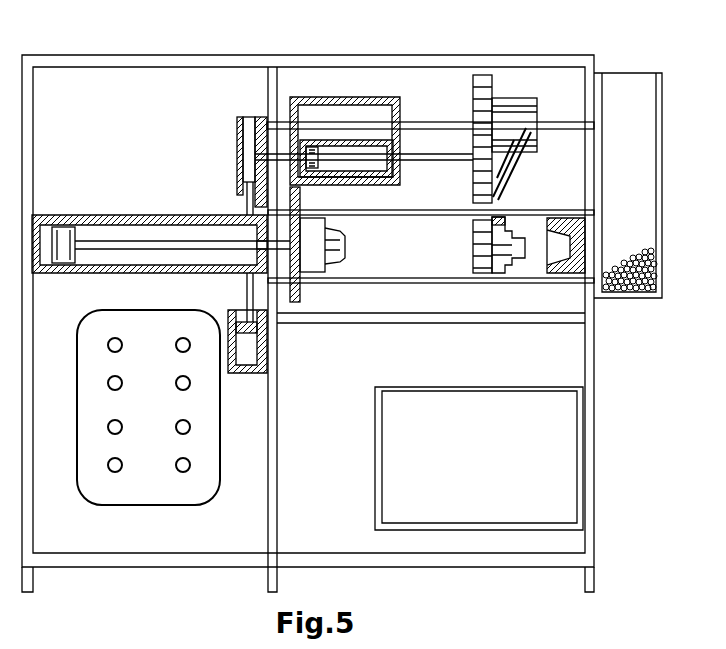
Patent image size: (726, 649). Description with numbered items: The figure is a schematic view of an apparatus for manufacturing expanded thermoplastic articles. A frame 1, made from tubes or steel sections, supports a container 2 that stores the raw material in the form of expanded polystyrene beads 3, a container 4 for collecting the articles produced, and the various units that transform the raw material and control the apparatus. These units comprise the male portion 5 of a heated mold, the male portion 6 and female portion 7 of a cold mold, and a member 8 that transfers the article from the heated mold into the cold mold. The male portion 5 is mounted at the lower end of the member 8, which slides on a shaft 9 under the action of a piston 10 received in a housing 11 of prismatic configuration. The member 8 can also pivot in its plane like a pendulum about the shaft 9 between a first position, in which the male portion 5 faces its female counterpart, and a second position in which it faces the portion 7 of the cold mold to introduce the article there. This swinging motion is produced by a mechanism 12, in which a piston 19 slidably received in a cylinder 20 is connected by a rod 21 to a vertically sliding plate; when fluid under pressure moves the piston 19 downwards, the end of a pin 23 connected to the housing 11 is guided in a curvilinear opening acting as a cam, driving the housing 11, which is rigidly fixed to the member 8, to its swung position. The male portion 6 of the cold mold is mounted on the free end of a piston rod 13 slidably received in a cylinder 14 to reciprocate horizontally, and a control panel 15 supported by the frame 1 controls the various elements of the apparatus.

The frame 1 is at (122, 58).
The container 2 is at (650, 95).
The expanded polystyrene beads 3 is at (658, 270).
The container 4 is at (567, 463).
The male portion of the heated mold 5 is at (505, 218).
The male portion of the cold mold 6 is at (346, 246).
The female portion of the cold mold 7 is at (562, 218).
The member 8 is at (503, 98).
The shaft 9 is at (430, 122).
The piston 10 is at (395, 160).
The housing 11 is at (342, 97).
The mechanism 12 is at (237, 133).
The piston rod 13 is at (173, 240).
The cylinder 14 is at (80, 215).
The control panel 15 is at (204, 492).
The piston 19 is at (257, 330).
The cylinder 20 is at (258, 373).
The rod 21 is at (247, 285).
The pin 23 is at (300, 185).